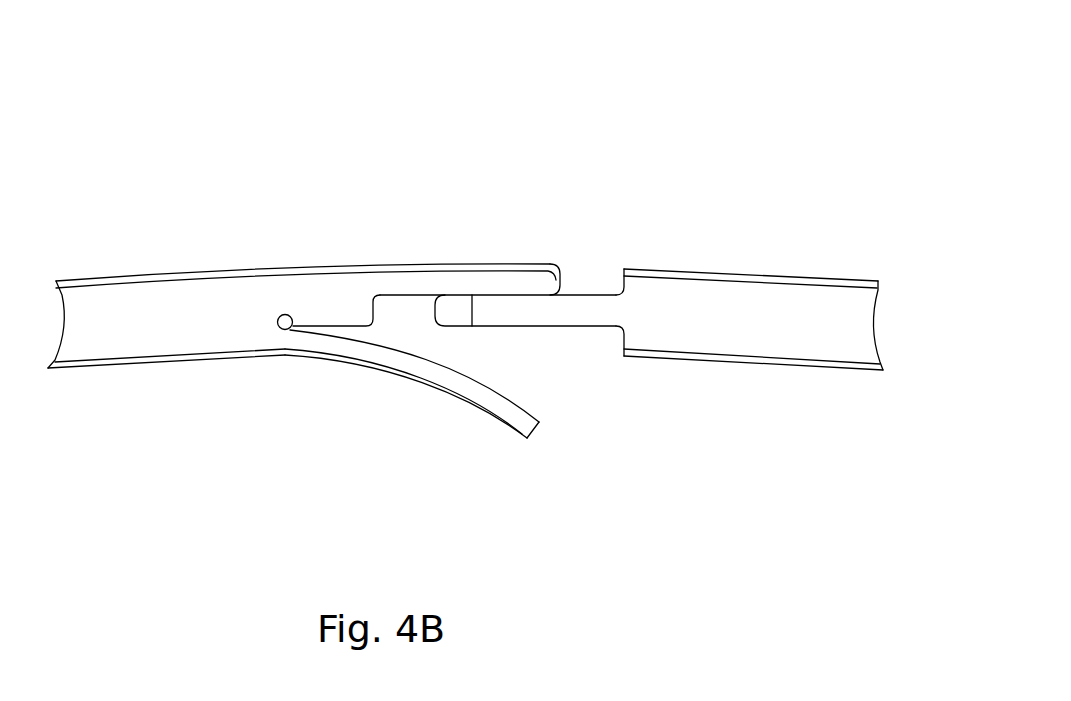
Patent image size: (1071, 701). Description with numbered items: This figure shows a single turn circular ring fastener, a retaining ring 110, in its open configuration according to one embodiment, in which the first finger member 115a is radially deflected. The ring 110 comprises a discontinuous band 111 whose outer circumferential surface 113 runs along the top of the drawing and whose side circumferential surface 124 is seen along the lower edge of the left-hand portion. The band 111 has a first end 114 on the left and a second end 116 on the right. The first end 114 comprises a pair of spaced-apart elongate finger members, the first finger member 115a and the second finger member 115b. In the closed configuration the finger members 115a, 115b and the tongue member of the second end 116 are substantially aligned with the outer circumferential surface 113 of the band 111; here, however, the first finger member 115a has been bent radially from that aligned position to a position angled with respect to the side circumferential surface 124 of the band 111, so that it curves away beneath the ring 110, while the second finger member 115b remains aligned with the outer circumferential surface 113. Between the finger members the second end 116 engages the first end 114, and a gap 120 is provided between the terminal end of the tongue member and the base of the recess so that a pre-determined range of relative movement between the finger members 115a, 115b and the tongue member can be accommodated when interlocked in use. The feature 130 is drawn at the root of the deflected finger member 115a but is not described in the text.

The ring 110 is at (768, 198).
The band 111 is at (821, 393).
The outer circumferential surface 113 is at (87, 300).
The first end 114 is at (327, 290).
The first finger member 115a is at (520, 428).
The second finger member 115b is at (558, 272).
The second end 116 is at (791, 304).
The gap 120 is at (403, 308).
The side circumferential surface 124 is at (97, 362).
The pivot 130 is at (284, 330).